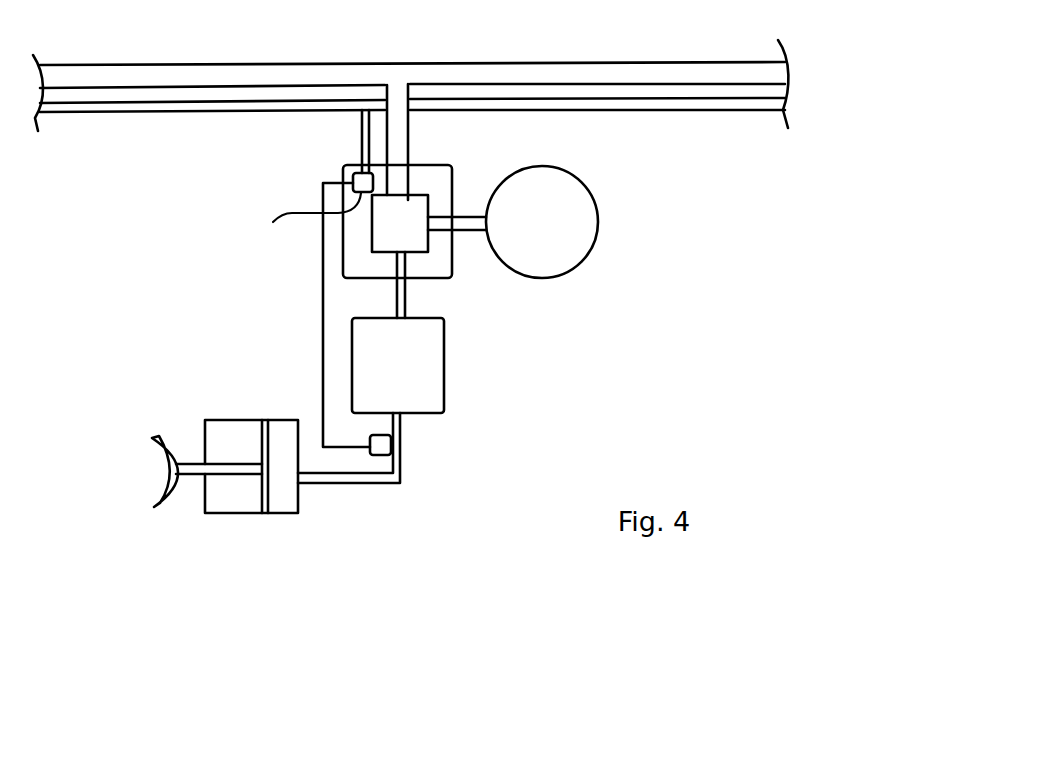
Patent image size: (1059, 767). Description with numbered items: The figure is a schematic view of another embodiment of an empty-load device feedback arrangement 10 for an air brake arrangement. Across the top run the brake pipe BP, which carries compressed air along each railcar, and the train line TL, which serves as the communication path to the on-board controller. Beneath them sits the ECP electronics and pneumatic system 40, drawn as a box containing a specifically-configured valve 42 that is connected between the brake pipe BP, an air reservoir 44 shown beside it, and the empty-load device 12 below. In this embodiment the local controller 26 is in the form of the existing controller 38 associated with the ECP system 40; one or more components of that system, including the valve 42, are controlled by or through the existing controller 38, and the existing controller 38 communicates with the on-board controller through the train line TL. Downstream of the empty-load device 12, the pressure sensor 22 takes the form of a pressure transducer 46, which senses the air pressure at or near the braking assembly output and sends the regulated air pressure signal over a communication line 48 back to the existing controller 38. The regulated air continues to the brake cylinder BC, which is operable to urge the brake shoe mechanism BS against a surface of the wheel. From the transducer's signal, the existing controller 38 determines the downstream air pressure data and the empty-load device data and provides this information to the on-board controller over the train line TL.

The empty-load device feedback arrangement 10 is at (210, 243).
The brake pipe BP is at (558, 63).
The train line TL is at (657, 99).
The ECP electronics and pneumatic system 40 is at (462, 158).
The local controller 26 is at (330, 165).
The valve 42 is at (432, 250).
The air reservoir 44 is at (513, 222).
The existing controller 38 is at (299, 219).
The communication line 48 is at (323, 328).
The empty-load device 12 is at (398, 365).
The pressure transducer 46 is at (391, 440).
The pressure sensor 22 is at (410, 458).
The brake cylinder BC is at (232, 412).
The brake shoe mechanism BS is at (164, 434).